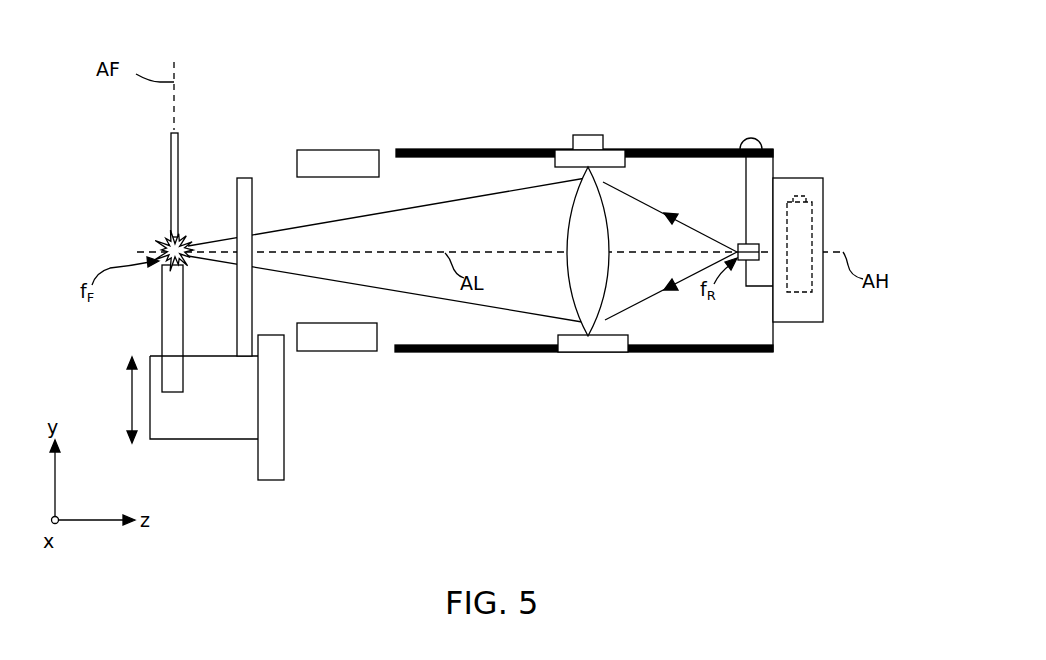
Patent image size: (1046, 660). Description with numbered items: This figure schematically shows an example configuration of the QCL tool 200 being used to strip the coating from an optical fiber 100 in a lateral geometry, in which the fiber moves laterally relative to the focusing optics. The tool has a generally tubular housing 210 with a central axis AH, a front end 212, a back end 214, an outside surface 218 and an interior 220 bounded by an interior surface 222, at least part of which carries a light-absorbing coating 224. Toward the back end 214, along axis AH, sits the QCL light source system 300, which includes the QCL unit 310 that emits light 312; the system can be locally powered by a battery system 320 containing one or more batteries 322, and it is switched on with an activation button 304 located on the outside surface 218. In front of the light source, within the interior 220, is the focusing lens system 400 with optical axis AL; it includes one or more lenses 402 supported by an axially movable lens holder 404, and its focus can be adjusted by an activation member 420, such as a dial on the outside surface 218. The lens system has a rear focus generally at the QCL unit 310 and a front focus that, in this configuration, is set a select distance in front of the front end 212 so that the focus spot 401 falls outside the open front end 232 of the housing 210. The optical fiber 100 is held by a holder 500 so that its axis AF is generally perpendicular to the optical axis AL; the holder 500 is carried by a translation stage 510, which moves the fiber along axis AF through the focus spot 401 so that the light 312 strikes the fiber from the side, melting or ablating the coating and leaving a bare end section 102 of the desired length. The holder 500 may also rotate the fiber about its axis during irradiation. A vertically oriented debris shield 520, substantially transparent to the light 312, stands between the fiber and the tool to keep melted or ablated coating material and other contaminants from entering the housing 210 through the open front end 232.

The optical fiber 100 is at (127, 224).
The bare end section 102 is at (171, 192).
The QCL tool 200 is at (352, 32).
The housing 210 is at (745, 92).
The front end 212 is at (297, 155).
The back end 214 is at (773, 166).
The outside surface 218 is at (486, 150).
The interior 220 is at (673, 172).
The interior surface 222 is at (460, 152).
The light-absorbing coating 224 is at (484, 345).
The open front end 232 is at (286, 180).
The QCL light source system 300 is at (739, 297).
The activation button 304 is at (751, 138).
The QCL unit 310 is at (738, 246).
The light 312 is at (655, 293).
The battery system 320 is at (803, 322).
The battery 322 is at (812, 218).
The focusing lens system 400 is at (540, 230).
The focus spot 401 is at (152, 244).
The lens 402 is at (587, 320).
The lens holder 404 is at (589, 352).
The activation member 420 is at (594, 135).
The holder 500 is at (204, 397).
The translation stage 510 is at (284, 424).
The debris shield 520 is at (244, 178).